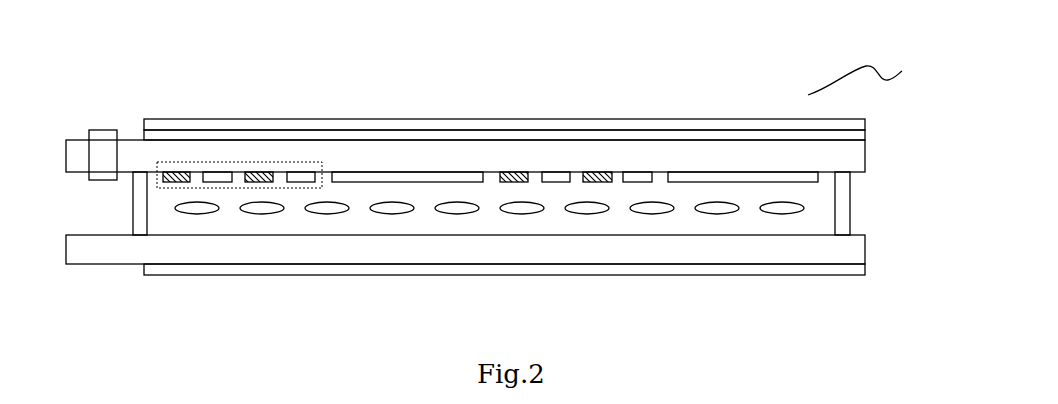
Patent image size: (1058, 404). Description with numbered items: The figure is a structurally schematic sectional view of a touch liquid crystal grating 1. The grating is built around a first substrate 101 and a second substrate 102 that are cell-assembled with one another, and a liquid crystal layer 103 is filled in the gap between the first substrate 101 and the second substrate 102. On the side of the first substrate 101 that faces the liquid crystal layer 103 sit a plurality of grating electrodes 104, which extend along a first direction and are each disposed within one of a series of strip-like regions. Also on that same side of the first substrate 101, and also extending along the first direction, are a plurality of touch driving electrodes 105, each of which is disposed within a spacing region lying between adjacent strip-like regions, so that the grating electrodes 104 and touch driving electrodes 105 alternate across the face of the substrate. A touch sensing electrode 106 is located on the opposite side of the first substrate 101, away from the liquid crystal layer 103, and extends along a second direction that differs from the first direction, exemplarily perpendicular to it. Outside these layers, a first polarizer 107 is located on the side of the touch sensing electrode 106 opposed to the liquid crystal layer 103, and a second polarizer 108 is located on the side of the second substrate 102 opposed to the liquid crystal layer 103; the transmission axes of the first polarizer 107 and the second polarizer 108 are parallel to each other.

The touch liquid crystal grating 1 is at (866, 72).
The first substrate 101 is at (858, 157).
The second substrate 102 is at (745, 250).
The liquid crystal layer 103 is at (578, 215).
The grating electrodes 104 is at (235, 186).
The touch driving electrodes 105 is at (430, 178).
The touch sensing electrode 106 is at (505, 138).
The first polarizer 107 is at (688, 126).
The second polarizer 108 is at (160, 268).